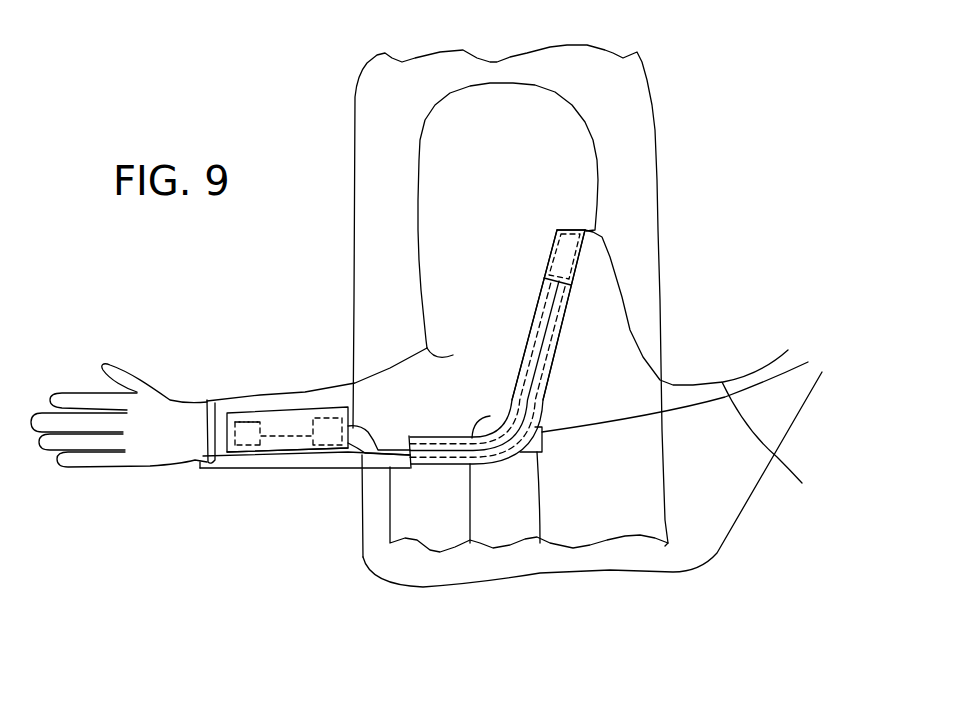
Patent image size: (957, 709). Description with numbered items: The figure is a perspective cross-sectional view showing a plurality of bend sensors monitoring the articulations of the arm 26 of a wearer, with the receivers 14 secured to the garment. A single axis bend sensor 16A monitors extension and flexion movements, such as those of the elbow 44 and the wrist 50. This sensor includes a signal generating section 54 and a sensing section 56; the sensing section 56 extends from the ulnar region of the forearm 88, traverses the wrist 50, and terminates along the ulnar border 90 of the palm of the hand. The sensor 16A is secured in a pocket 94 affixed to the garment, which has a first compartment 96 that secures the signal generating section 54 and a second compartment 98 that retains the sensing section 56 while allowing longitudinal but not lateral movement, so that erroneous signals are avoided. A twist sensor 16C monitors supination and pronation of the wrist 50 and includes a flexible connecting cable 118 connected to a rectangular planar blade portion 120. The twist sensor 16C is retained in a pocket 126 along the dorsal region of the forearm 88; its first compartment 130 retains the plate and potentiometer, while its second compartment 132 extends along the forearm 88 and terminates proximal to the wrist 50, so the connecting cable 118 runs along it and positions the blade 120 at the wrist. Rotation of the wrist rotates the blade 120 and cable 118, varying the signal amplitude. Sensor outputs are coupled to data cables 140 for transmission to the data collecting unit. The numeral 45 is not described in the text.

The arm 26 is at (521, 174).
The receiver 14 is at (522, 458).
The single axis bend sensor 16A is at (297, 469).
The twist sensor 16C is at (295, 412).
The elbow 44 is at (540, 511).
The belt anchor line 45 is at (468, 522).
The wrist 50 is at (205, 401).
The signal generating section 54 is at (560, 268).
The sensing section 56 is at (431, 440).
The forearm 88 is at (342, 398).
The ulnar border 90 is at (153, 452).
The pocket 94 is at (510, 397).
The first compartment 96 is at (567, 232).
The second compartment 98 is at (546, 388).
The connecting cable 118 is at (283, 432).
The blade portion 120 is at (245, 437).
The pocket 126 is at (268, 460).
The first compartment 130 is at (358, 463).
The second compartment 132 is at (268, 420).
The data cable 140 is at (424, 588).